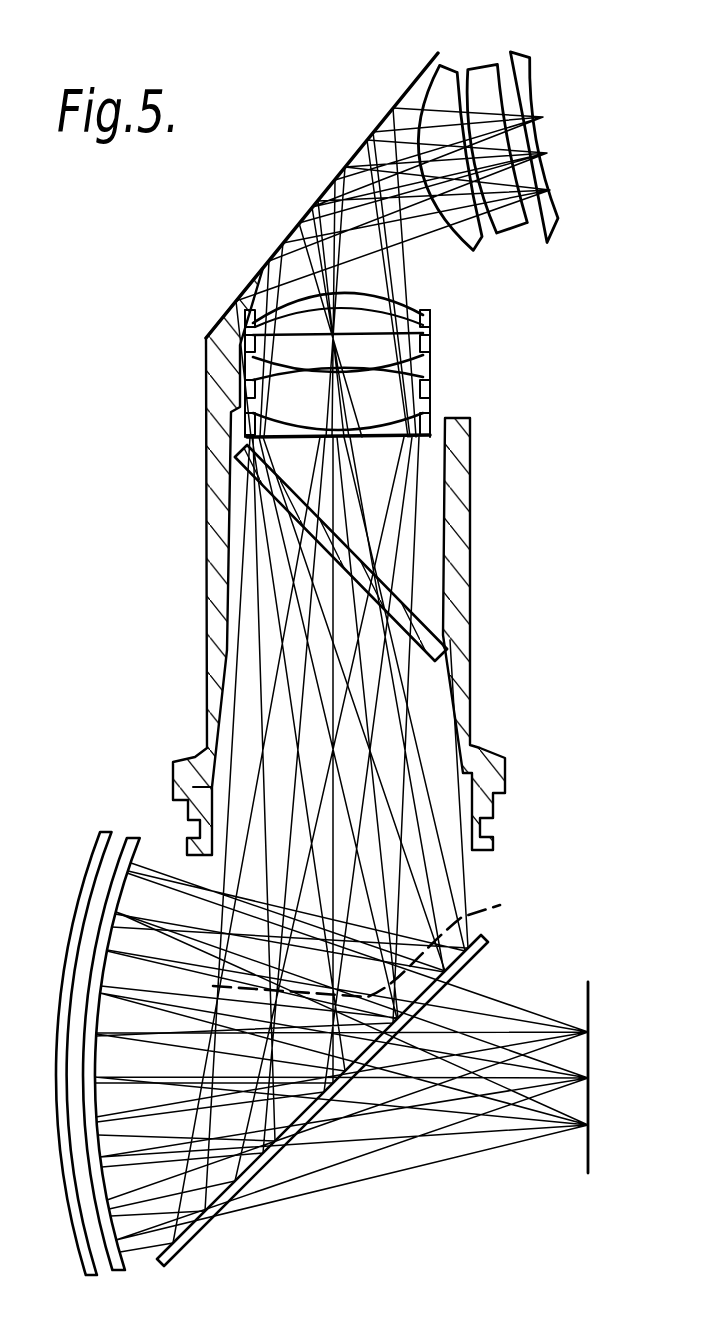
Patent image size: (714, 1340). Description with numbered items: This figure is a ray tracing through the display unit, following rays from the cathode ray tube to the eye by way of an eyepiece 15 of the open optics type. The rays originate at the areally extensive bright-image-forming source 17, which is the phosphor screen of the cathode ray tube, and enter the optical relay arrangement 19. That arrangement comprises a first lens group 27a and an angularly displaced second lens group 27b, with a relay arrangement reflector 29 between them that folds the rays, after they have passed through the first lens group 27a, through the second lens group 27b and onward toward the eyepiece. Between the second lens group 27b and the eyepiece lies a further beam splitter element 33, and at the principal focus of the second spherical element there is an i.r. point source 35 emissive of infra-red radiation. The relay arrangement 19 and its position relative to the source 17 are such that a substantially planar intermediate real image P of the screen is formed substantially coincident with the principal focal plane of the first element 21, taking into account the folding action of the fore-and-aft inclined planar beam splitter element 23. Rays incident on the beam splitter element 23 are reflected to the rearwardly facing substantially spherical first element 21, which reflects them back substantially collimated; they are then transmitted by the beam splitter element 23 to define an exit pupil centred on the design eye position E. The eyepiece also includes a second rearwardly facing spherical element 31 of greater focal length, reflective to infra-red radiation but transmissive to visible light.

The eyepiece 15 is at (140, 1270).
The areally extensive bright-image-forming source 17 is at (512, 62).
The optical relay arrangement 19 is at (457, 275).
The first element 21 is at (138, 852).
The beam splitter element 23 is at (298, 1116).
The first lens group 27a is at (495, 245).
The second lens group 27b is at (432, 367).
The relay arrangement reflector 29 is at (370, 137).
The second element 31 is at (80, 944).
The further beam splitter element 33 is at (297, 536).
The i.r. point source 35 is at (232, 578).
The intermediate real image P is at (367, 941).
The design eye position E is at (604, 1077).